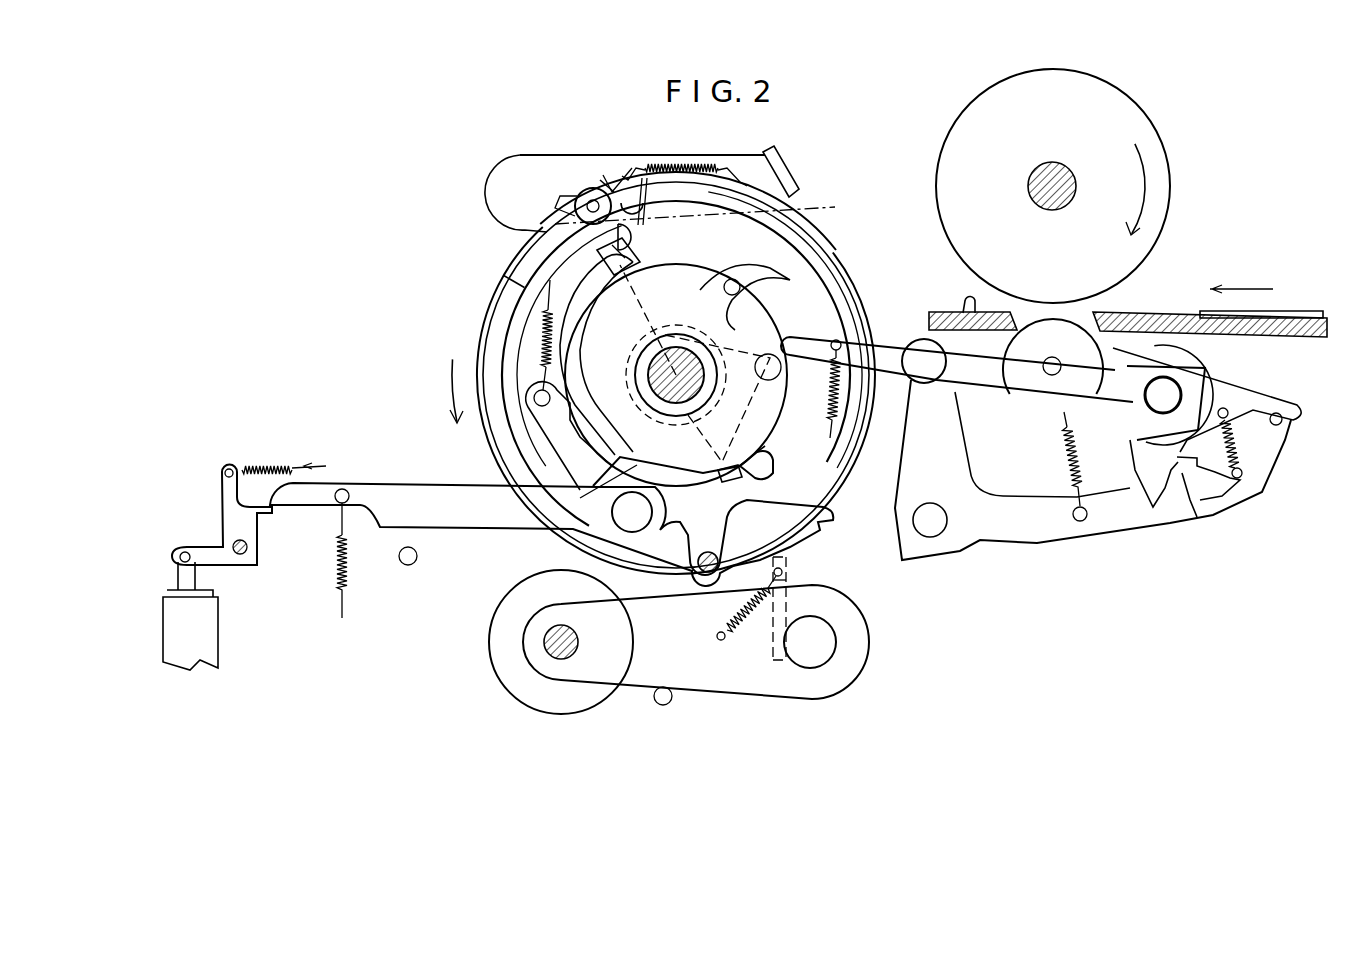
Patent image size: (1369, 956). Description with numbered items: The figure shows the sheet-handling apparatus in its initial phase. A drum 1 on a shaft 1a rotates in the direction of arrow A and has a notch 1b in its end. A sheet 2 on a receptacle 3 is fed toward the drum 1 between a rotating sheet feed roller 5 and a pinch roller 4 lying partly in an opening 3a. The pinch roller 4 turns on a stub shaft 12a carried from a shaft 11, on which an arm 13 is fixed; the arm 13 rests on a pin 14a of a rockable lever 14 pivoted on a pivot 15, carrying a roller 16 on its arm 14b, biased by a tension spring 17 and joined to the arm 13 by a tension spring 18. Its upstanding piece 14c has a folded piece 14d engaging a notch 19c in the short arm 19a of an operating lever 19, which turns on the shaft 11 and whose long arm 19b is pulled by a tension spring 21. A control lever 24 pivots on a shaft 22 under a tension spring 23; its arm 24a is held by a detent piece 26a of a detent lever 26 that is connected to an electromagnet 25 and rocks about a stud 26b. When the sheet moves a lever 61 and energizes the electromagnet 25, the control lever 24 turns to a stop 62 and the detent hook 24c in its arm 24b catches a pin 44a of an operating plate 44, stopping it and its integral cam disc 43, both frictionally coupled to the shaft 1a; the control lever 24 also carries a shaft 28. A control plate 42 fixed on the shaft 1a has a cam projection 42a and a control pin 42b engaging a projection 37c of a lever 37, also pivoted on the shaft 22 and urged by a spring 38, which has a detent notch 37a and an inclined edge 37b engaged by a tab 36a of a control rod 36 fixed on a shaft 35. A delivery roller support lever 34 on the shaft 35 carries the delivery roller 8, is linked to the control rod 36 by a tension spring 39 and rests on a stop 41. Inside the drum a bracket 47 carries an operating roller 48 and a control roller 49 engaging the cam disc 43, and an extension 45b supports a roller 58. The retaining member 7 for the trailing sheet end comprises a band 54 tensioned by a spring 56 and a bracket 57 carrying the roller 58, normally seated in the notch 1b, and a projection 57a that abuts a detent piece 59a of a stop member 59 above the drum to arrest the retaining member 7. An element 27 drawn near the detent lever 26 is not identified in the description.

The brake drum 1 is at (860, 272).
The drum hub/axle 1a is at (690, 358).
The drum lever 1b is at (615, 190).
The slide plate 2 is at (1258, 311).
The base plate 3 is at (1265, 337).
The plate edge 3a is at (1092, 314).
The roller 4 is at (1035, 415).
The drive wheel 5 is at (1152, 146).
The link 7 is at (570, 187).
The wheel 8 is at (520, 700).
The pivot block 11 is at (1185, 388).
The roller pin 12a is at (1060, 373).
The arm plate 13 is at (1270, 392).
The frame plate 14 is at (1115, 530).
The frame pin 14a is at (1285, 421).
The frame edge 14b is at (912, 420).
The frame notch 14c is at (1190, 500).
The frame lug 14d is at (1230, 490).
The frame hole 15 is at (930, 537).
The pivot 16 is at (910, 378).
The spring 17 is at (1062, 470).
The spring 18 is at (1245, 440).
The lever 19 is at (974, 398).
The lever arm 19a is at (1128, 442).
The lever end 19b is at (892, 336).
The lever hook 19c is at (1172, 498).
The spring 21 is at (826, 415).
The pivot hole 22 is at (632, 533).
The spring 23 is at (336, 565).
The brake lever 24 is at (466, 545).
The lever arm 24a is at (437, 488).
The lever end 24b is at (760, 480).
The lever pawl 24c is at (728, 465).
The solenoid 25 is at (217, 628).
The actuating lever 26 is at (222, 520).
The lever hook 26a is at (270, 512).
The pivot pin 26b is at (243, 556).
The spring 27 is at (268, 465).
The pin 28 is at (718, 555).
The lever 34 is at (706, 685).
The hole 35 is at (830, 650).
The rod 36 is at (775, 655).
The rod end 36a is at (790, 568).
The lever end 37 is at (833, 515).
The notch 37a is at (830, 538).
The notch 37b is at (795, 548).
The lever arm 37c is at (595, 400).
The spring 38 is at (545, 358).
The spring 39 is at (755, 608).
The hole 41 is at (654, 700).
The brake shoe 42 is at (705, 272).
The shoe end 42a is at (582, 495).
The shoe arm 42b is at (755, 280).
The brake lining 43 is at (780, 292).
The pawl 44 is at (602, 270).
The pawl pin 44a is at (766, 354).
The arm 45b is at (603, 354).
The link 47 is at (646, 224).
The ring 48 is at (645, 208).
The hook 49 is at (643, 242).
The brake shoe 54 is at (478, 318).
The spring 56 is at (680, 165).
The brake band 57 is at (518, 248).
The band pivot 57a is at (558, 204).
The clamp 58 is at (605, 176).
The band lever 59 is at (497, 178).
The stop 59a is at (783, 158).
The pin 61 is at (962, 306).
The hole 62 is at (405, 565).
The rotation direction A is at (452, 400).